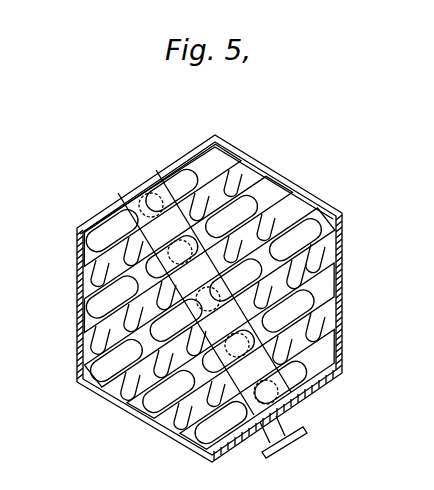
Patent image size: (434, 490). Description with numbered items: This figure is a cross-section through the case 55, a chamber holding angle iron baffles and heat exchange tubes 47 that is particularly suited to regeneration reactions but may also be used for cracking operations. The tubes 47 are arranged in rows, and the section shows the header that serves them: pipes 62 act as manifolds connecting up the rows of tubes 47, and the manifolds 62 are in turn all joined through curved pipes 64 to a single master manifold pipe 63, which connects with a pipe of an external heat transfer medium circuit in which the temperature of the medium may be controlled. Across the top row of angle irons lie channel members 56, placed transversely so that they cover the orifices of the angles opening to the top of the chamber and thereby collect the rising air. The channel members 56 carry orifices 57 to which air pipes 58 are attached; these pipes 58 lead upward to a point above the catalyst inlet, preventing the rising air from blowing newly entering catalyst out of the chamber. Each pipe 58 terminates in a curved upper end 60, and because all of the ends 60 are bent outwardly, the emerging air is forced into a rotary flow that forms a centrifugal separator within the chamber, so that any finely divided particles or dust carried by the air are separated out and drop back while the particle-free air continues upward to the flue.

The tubes 47 is at (343, 352).
The case 55 is at (140, 192).
The channel members 56 is at (330, 312).
The orifices 57 is at (322, 257).
The pipes 58 is at (228, 173).
The curved upper end 60 is at (285, 212).
The pipes 62 is at (322, 240).
The master manifold pipe 63 is at (300, 410).
The curved pipes 64 is at (320, 218).